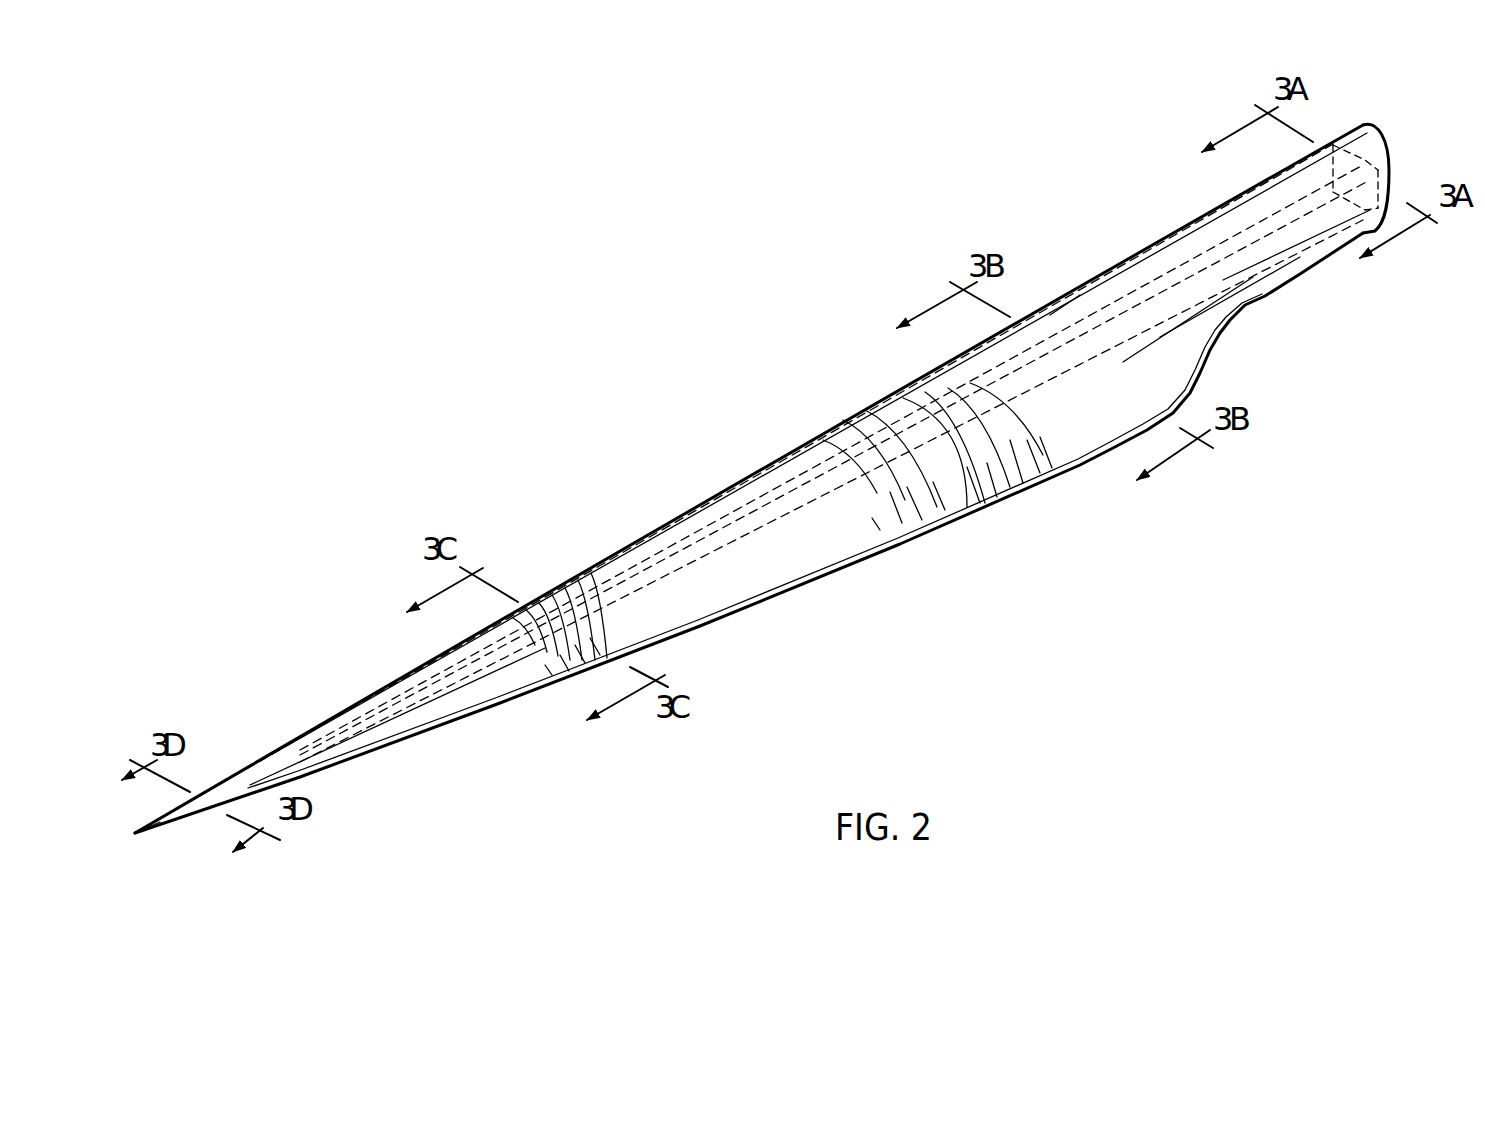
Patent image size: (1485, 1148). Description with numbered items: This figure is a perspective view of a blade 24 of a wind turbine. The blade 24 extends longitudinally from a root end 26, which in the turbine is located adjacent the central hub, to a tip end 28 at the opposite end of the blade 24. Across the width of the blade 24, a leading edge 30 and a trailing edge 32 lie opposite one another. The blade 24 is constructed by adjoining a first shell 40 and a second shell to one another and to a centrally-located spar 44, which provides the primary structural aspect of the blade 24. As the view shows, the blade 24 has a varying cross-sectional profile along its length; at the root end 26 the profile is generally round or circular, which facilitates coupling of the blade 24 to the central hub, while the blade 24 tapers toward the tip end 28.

The blade 24 is at (606, 366).
The root end 26 is at (1343, 128).
The tip end 28 is at (125, 835).
The leading edge 30 is at (720, 490).
The trailing edge 32 is at (742, 610).
The first shell 40 is at (720, 596).
The spar 44 is at (861, 438).